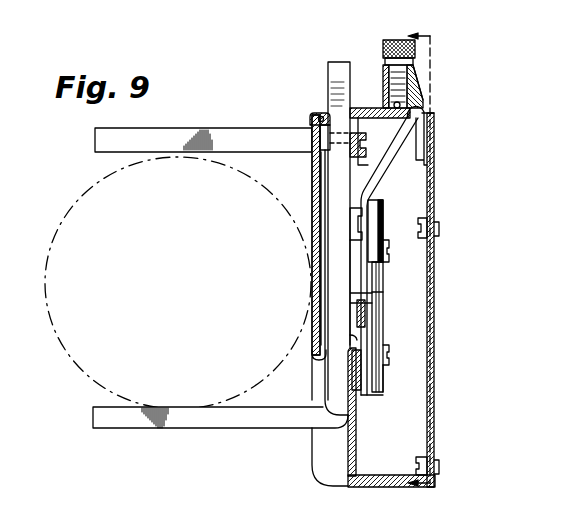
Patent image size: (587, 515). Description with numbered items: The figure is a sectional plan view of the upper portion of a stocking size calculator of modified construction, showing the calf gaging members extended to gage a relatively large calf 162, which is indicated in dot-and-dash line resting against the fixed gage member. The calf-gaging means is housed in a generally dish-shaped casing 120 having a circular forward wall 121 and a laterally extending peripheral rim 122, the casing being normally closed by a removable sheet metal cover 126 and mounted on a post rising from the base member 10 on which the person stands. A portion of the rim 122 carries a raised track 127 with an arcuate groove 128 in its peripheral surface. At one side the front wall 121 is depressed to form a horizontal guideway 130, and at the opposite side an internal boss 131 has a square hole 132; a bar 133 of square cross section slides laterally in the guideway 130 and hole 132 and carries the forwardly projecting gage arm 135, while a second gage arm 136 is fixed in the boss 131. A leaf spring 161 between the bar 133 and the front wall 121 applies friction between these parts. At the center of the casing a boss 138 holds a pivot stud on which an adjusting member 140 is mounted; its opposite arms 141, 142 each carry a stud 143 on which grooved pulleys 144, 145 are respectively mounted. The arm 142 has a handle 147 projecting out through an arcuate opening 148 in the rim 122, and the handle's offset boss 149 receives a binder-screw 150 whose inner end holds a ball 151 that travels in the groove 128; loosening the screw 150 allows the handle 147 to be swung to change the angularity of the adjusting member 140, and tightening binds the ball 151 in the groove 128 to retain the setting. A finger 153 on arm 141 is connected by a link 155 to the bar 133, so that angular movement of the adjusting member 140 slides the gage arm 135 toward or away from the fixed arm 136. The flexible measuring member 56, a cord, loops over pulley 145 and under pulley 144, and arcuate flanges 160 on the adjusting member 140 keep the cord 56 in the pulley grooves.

The base member 10 is at (438, 259).
The flexible measuring member 56 is at (380, 298).
The casing 120 is at (348, 487).
The forward wall 121 is at (312, 170).
The peripheral rim 122 is at (376, 476).
The cover 126 is at (433, 405).
The track 127 is at (410, 114).
The groove 128 is at (385, 141).
The guideway 130 is at (343, 441).
The internal boss 131 is at (360, 158).
The square hole 132 is at (320, 116).
The bar 133 is at (330, 325).
The gage arm 135 is at (142, 430).
The second gage arm 136 is at (226, 137).
The boss 138 is at (357, 336).
The adjusting member 140 is at (374, 222).
The arm 141 is at (345, 386).
The arm 142 is at (358, 244).
The stud 143 is at (389, 259).
The grooved pulley 144 is at (388, 370).
The grooved pulley 145 is at (387, 278).
The handle 147 is at (427, 157).
The arcuate opening 148 is at (425, 130).
The offset boss 149 is at (414, 72).
The binder-screw 150 is at (383, 80).
The ball 151 is at (422, 95).
The finger 153 is at (382, 307).
The link 155 is at (352, 278).
The arcuate flanges 160 is at (370, 382).
The leaf spring 161 is at (310, 250).
The calf 162 is at (82, 373).